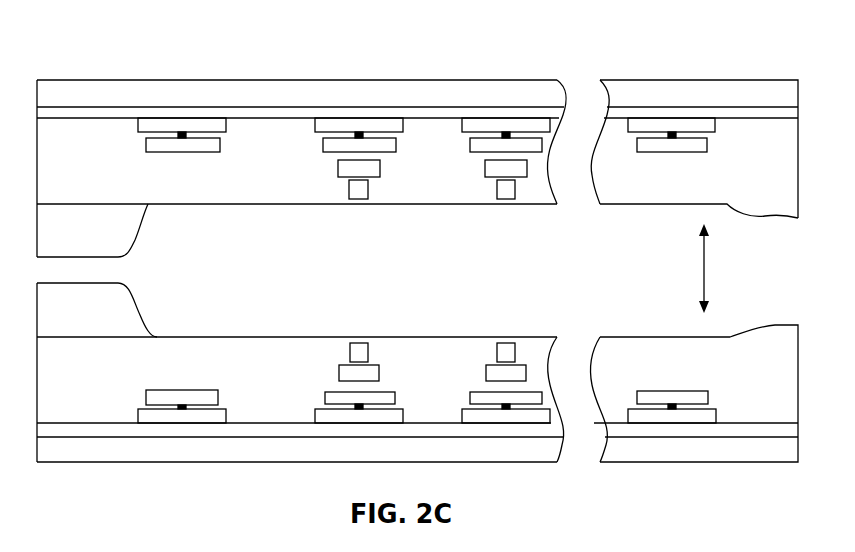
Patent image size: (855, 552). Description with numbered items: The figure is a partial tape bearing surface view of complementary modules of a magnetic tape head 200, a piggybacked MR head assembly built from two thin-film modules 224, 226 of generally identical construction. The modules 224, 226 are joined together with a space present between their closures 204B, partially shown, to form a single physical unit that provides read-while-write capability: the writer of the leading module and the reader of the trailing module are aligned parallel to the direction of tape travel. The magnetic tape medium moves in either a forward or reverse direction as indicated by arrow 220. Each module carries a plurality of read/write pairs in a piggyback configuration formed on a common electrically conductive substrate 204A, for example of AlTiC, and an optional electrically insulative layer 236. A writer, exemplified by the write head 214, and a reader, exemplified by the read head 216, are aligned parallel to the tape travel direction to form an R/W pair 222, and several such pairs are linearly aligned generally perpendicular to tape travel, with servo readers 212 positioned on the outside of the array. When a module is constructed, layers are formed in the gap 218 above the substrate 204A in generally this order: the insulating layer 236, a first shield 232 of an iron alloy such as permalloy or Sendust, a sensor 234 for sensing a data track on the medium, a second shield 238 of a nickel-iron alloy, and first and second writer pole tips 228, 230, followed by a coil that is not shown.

The magnetic tape head 200 is at (350, 64).
The substrate 204A is at (163, 104).
The closure 204B is at (133, 229).
The gap 218 is at (227, 204).
The thin-film module 224 is at (722, 80).
The arrow 220 is at (705, 273).
The servo reader 212 is at (221, 383).
The R/W pair 222 is at (369, 316).
The write head 214 is at (432, 373).
The second writer pole tip 230 is at (349, 352).
The first writer pole tip 228 is at (339, 364).
The read head 216 is at (449, 410).
The second shield 238 is at (325, 394).
The sensor 234 is at (312, 403).
The first shield 232 is at (315, 417).
The insulating layer 236 is at (789, 416).
The thin-film module 226 is at (710, 462).